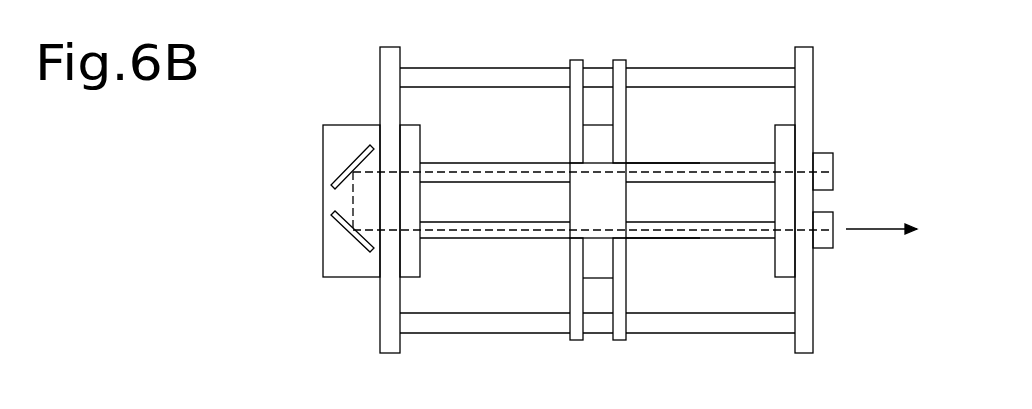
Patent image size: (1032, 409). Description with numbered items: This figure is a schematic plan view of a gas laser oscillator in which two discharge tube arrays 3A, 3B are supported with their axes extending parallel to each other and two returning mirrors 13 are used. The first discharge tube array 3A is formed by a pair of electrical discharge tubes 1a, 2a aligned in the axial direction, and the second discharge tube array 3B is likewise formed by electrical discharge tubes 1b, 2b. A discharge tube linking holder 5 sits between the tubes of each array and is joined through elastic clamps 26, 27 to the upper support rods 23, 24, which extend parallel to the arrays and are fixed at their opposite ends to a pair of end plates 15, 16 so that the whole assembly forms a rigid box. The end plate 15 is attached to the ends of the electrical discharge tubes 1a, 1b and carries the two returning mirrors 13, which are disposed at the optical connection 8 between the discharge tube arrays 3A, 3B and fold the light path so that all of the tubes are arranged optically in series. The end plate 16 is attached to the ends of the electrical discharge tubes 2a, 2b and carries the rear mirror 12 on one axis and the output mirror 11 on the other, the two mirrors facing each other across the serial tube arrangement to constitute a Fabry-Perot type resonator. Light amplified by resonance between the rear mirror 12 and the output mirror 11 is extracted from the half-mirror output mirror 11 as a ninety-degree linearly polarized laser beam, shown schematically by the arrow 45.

The electrical discharge tube 1a is at (500, 162).
The electrical discharge tube 1b is at (495, 240).
The electrical discharge tube 2a is at (700, 163).
The electrical discharge tube 2b is at (715, 238).
The discharge tube array 3A is at (658, 155).
The discharge tube array 3B is at (656, 248).
The discharge tube linking holder 5 is at (588, 204).
The optical connection 8 is at (330, 237).
The output mirror 11 is at (830, 240).
The rear mirror 12 is at (833, 158).
The returning mirror 13 is at (352, 151).
The end plate 15 is at (390, 68).
The end plate 16 is at (803, 63).
The support rod 23 is at (723, 74).
The support rod 24 is at (722, 330).
The clamp 26 is at (578, 60).
The clamp 27 is at (578, 342).
The arrow 45 is at (873, 229).